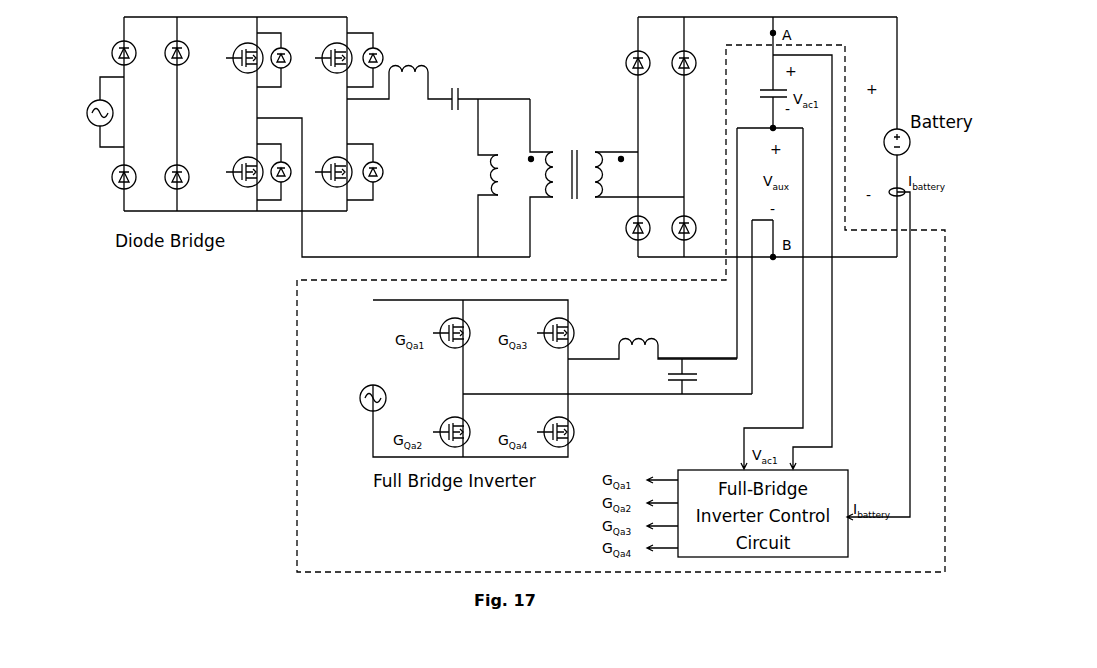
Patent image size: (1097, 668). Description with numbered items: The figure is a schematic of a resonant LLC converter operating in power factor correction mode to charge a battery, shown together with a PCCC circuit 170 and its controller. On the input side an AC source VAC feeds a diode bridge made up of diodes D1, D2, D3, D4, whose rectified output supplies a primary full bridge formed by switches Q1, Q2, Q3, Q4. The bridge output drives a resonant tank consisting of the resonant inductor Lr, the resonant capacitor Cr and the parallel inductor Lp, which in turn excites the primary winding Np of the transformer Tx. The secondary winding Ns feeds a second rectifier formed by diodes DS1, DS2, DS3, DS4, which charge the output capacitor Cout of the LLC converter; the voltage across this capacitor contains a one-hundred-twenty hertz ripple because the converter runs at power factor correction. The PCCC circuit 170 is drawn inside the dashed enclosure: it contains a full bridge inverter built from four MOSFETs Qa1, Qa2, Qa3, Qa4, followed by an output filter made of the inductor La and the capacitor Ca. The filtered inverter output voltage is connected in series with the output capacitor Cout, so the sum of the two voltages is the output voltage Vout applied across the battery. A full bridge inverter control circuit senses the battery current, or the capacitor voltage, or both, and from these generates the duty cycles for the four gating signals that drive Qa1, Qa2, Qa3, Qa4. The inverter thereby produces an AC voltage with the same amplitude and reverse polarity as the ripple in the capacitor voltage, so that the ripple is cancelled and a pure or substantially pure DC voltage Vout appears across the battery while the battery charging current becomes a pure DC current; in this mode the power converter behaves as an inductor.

The PCCC circuit 170 is at (296, 413).
The AC input voltage source VAC is at (84, 113).
The bridge rectifier diode D1 is at (131, 45).
The bridge rectifier diode D2 is at (184, 45).
The bridge rectifier diode D3 is at (184, 170).
The bridge rectifier diode D4 is at (131, 170).
The primary full bridge switch Q1 is at (258, 57).
The primary full bridge switch Q2 is at (258, 167).
The primary full bridge switch Q3 is at (349, 57).
The primary full bridge switch Q4 is at (349, 167).
The resonant inductor Lr is at (408, 62).
The resonant capacitor Cr is at (453, 88).
The parallel (magnetizing) inductor Lp is at (484, 175).
The transformer Tx is at (573, 167).
The transformer primary winding Np is at (536, 174).
The transformer secondary winding Ns is at (611, 174).
The secondary rectifier diode DS1 is at (644, 55).
The secondary rectifier diode DS2 is at (644, 222).
The secondary rectifier diode DS3 is at (691, 55).
The secondary rectifier diode DS4 is at (691, 222).
The output capacitor Cout is at (760, 102).
The battery / output voltage Vout is at (879, 143).
The MOSFET of the full bridge inverter Qa1 is at (461, 326).
The MOSFET of the full bridge inverter Qa2 is at (461, 426).
The MOSFET of the full bridge inverter Qa3 is at (565, 326).
The MOSFET of the full bridge inverter Qa4 is at (566, 426).
The auxiliary filter inductor La is at (638, 327).
The auxiliary filter capacitor Ca is at (670, 383).